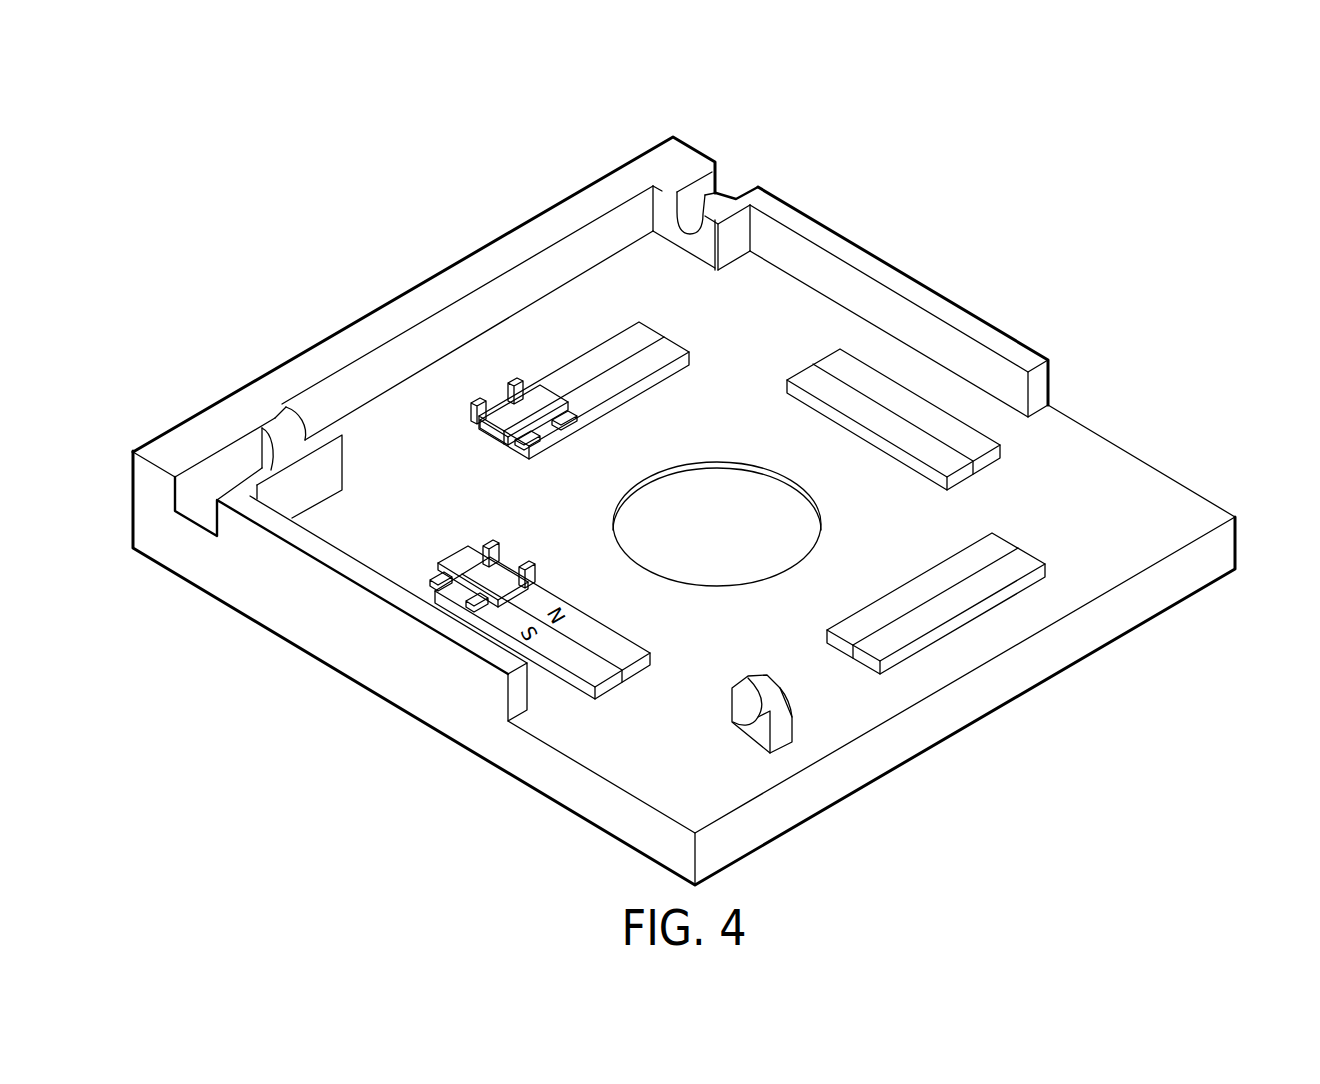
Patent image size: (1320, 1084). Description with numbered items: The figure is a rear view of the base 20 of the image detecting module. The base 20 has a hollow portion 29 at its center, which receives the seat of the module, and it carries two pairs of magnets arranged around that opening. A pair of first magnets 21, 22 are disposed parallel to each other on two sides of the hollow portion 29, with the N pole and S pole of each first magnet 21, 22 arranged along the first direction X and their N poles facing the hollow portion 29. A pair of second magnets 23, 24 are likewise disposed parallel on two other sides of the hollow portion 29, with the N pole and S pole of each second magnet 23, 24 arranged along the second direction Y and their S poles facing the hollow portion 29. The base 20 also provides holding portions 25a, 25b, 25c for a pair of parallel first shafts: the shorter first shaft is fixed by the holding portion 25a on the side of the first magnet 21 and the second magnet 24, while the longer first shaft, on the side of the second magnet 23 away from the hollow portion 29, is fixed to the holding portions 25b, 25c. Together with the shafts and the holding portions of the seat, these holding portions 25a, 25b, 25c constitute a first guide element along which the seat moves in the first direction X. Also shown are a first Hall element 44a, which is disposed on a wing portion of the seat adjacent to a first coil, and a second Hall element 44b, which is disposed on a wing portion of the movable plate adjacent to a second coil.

The base 20 is at (1160, 440).
The first magnet 21 is at (568, 694).
The first magnet 22 is at (927, 393).
The second magnet 23 is at (683, 330).
The second magnet 24 is at (990, 625).
The holding portion 25a is at (793, 738).
The holding portion 25b is at (275, 420).
The holding portion 25c is at (690, 182).
The hollow portion 29 is at (648, 518).
The first Hall element 44a is at (474, 574).
The second Hall element 44b is at (518, 412).